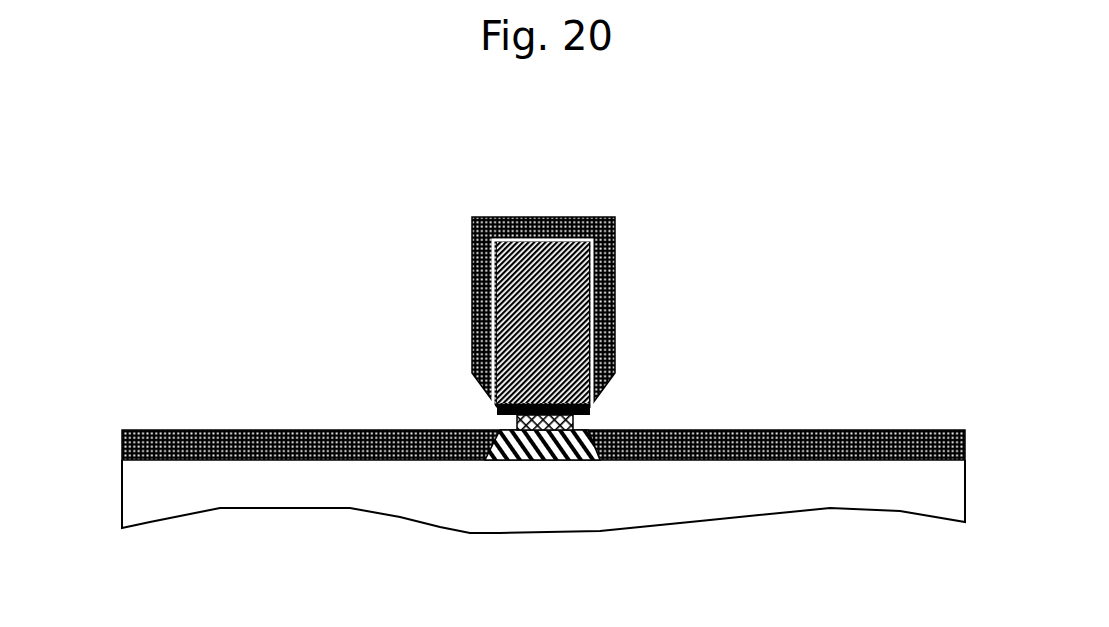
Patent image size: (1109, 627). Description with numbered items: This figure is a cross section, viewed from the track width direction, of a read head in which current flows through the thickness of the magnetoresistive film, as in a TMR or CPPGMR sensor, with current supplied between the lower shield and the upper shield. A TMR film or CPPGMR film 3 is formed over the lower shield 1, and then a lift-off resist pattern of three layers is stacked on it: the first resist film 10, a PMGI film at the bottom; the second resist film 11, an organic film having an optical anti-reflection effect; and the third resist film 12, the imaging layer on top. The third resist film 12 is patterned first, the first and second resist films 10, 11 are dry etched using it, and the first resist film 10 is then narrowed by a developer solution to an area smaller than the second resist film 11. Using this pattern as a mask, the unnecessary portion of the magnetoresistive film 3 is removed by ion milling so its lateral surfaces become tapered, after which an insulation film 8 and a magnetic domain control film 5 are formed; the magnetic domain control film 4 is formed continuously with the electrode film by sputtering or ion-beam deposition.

The lower shield 1 is at (785, 495).
The TMR film or CPPGMR film 3 is at (517, 460).
The magnetic domain control film 4 is at (212, 431).
The magnetic domain control film 5 is at (556, 313).
The insulation film 8 is at (476, 355).
The first resist film 10 is at (575, 428).
The second resist film 11 is at (598, 388).
The third resist film 12 is at (615, 300).